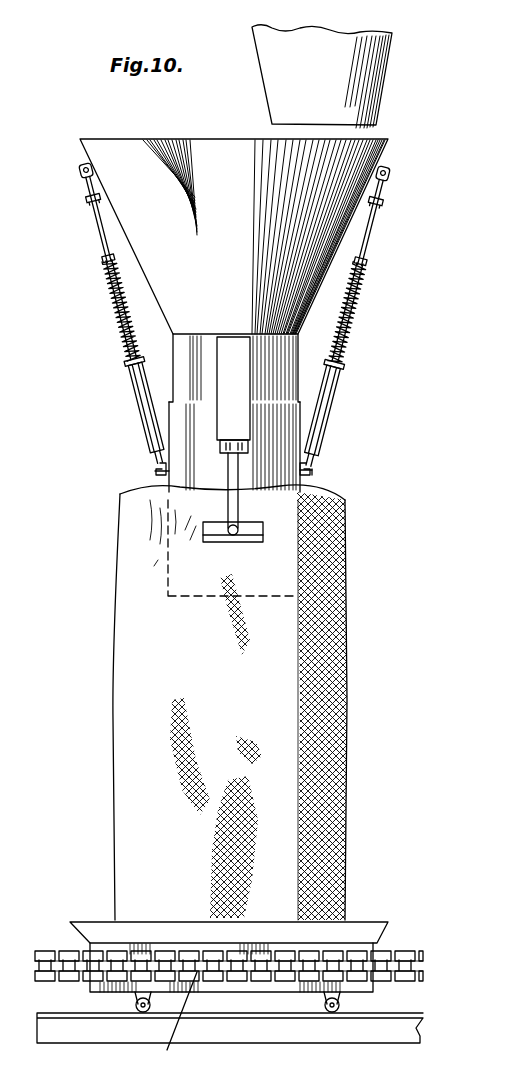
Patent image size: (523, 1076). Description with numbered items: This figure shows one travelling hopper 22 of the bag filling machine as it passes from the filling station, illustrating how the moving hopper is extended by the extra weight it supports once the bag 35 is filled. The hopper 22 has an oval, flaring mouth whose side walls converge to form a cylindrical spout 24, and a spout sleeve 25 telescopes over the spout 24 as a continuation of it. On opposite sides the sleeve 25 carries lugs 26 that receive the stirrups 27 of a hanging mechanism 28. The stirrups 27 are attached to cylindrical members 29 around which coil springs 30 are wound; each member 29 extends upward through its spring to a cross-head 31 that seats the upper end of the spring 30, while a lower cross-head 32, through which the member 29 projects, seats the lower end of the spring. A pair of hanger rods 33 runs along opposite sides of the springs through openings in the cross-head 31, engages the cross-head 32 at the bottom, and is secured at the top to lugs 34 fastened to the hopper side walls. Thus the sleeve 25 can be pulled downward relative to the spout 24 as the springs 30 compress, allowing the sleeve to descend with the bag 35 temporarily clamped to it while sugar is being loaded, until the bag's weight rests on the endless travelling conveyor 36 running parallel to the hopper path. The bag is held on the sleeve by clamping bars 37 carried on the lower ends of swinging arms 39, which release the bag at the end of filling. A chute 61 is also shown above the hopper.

The chute 61 is at (362, 75).
The travelling spout member 22 is at (137, 234).
The cylindrical spout 24 is at (190, 380).
The spout sleeve 25 is at (305, 484).
The lug 26 is at (312, 470).
The stirrup 27 is at (312, 457).
The hanging mechanism 28 is at (363, 330).
The cylindrical member 29 is at (338, 405).
The coil spring 30 is at (357, 300).
The cross-head 31 is at (373, 283).
The cross-head 32 is at (350, 368).
The hanger rod 33 is at (378, 213).
The lug 34 is at (5, 157).
The bag 35 is at (335, 672).
The endless travelling conveyor 36 is at (92, 932).
The clamping bar 37 is at (252, 530).
The swinging arm 39 is at (237, 505).